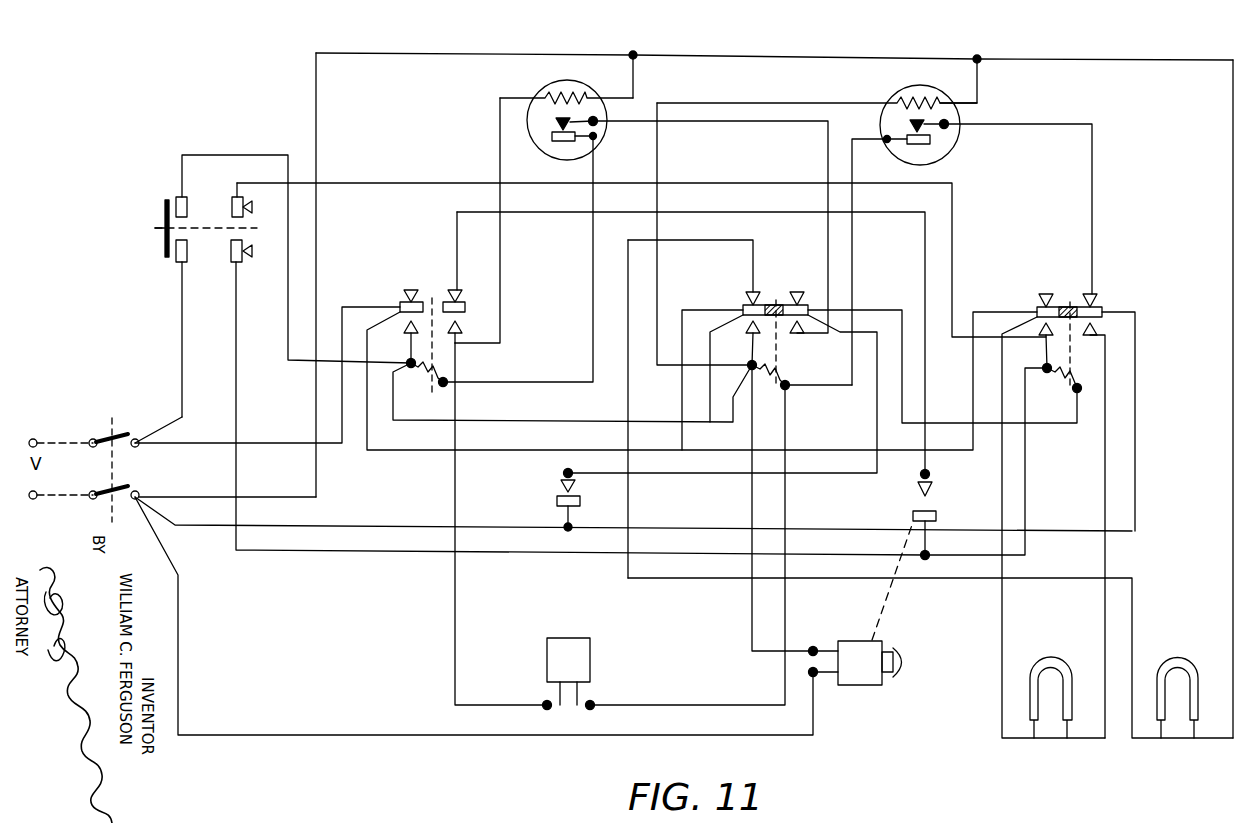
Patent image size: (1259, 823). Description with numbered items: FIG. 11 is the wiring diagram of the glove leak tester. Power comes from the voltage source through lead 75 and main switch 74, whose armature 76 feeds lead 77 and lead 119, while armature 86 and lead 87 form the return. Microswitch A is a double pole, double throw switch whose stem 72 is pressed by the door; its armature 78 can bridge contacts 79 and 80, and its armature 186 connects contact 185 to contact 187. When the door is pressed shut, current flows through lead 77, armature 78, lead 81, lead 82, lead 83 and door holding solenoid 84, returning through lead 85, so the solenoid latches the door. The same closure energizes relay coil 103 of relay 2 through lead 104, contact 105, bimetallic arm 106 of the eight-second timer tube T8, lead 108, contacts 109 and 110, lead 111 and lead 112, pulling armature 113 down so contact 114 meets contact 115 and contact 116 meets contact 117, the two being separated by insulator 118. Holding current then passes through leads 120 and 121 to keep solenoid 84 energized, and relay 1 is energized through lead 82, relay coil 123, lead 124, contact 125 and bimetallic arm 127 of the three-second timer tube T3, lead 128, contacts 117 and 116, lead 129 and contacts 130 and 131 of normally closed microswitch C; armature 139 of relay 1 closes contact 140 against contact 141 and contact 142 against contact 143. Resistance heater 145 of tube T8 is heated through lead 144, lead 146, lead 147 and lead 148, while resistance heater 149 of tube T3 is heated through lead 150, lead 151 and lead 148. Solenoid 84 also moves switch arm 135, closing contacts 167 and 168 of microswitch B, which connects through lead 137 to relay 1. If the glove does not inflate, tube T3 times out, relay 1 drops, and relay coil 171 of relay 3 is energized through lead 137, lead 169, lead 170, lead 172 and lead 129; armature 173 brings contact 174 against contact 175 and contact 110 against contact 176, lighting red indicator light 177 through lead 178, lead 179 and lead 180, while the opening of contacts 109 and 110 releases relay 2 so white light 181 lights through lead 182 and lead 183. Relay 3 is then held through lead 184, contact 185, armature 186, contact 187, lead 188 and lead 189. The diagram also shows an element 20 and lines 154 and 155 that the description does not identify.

The lead 147 is at (748, 54).
The lead 183 is at (1230, 400).
The lead 148 is at (318, 152).
The lead 151 is at (636, 86).
The lead 146 is at (979, 88).
The resistance heater 149 is at (560, 96).
The bimetallic arm 127 is at (598, 119).
The lead 128 is at (735, 124).
The contact 125 is at (552, 141).
The 3-second timer tube T3 is at (598, 142).
The lead 124 is at (591, 350).
The lead 150 is at (502, 266).
The resistance heater 145 is at (913, 100).
The bimetallic arm 106 is at (950, 121).
The lead 108 is at (1094, 176).
The contact 105 is at (907, 144).
The 8-second timer tube T8 is at (955, 148).
The lead 104 is at (854, 278).
The lead 81 is at (238, 154).
The stem 72 is at (163, 216).
The armature 78 is at (166, 206).
The contact 80 is at (187, 206).
The contact 185 is at (630, 246).
The lead 184 is at (755, 187).
The contact 79 is at (190, 264).
The contact 187 is at (243, 264).
The armature 186 is at (257, 228).
The microswitch A is at (212, 243).
The lead 75 is at (66, 440).
The switch armature 76 is at (131, 433).
The main switch 74 is at (98, 462).
The lead 87 is at (66, 499).
The switch armature 86 is at (138, 491).
The lead 77 is at (180, 350).
The lead 119 is at (203, 441).
The lead 188 is at (236, 424).
The lead 112 is at (343, 524).
The lead 85 is at (448, 737).
The armature 139 is at (434, 300).
The contact 140 is at (400, 304).
The contact 142 is at (462, 308).
The contact 141 is at (406, 330).
The contact 143 is at (462, 329).
The conductor 154 is at (457, 597).
The lead 82 is at (530, 420).
The relay coil 123 is at (437, 388).
The relay 1 is at (462, 348).
The lead 120 is at (397, 452).
The lead 144 is at (657, 214).
The insulator 118 is at (757, 290).
The lead 182 is at (630, 402).
The armature 113 is at (775, 304).
The contact 114 is at (744, 316).
The contact 115 is at (751, 336).
The contact 117 is at (796, 334).
The contact 116 is at (810, 309).
The lead 129 is at (875, 401).
The relay 2 is at (782, 358).
The lead 121 is at (748, 368).
The relay coil 103 is at (783, 390).
The conductor 155 is at (787, 606).
The lead 83 is at (750, 510).
The lead 178 is at (824, 450).
The contact 130 is at (576, 488).
The contact 131 is at (580, 505).
The microswitch C is at (579, 518).
The lead 189 is at (557, 554).
The pressure switch 20 is at (578, 638).
The door holding solenoid 84 is at (850, 640).
The switch arm 135 is at (895, 600).
The contact 167 is at (918, 496).
The lead 137 is at (916, 218).
The microswitch B is at (940, 497).
The contact 168 is at (936, 516).
The lead 169 is at (931, 553).
The lead 170 is at (1028, 494).
The lead 179 is at (1000, 452).
The lead 180 is at (1120, 566).
The armature 173 is at (1068, 305).
The contact 174 is at (1044, 298).
The contact 109 is at (1097, 296).
The contact 110 is at (1104, 311).
The contact 175 is at (1043, 342).
The contact 176 is at (1097, 334).
The relay 3 is at (1074, 352).
The relay coil 171 is at (1068, 394).
The lead 172 is at (1055, 427).
The lead 111 is at (1137, 446).
The red indicator light 177 is at (1030, 694).
The white indicator light 181 is at (1198, 692).